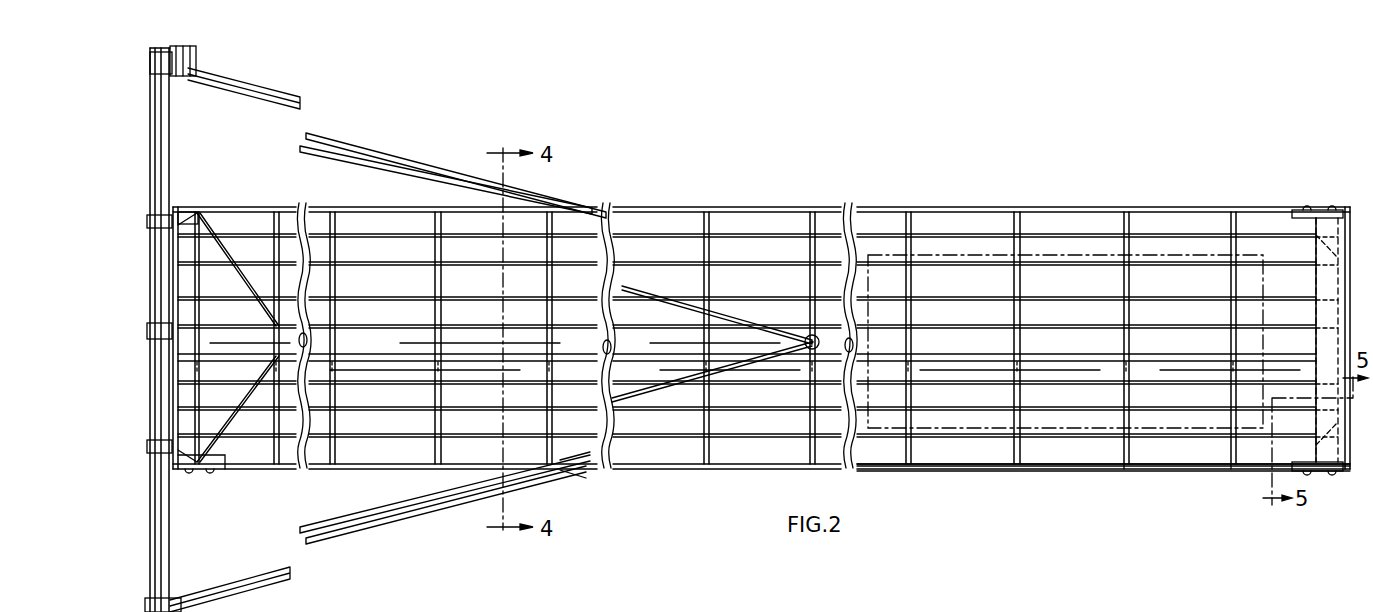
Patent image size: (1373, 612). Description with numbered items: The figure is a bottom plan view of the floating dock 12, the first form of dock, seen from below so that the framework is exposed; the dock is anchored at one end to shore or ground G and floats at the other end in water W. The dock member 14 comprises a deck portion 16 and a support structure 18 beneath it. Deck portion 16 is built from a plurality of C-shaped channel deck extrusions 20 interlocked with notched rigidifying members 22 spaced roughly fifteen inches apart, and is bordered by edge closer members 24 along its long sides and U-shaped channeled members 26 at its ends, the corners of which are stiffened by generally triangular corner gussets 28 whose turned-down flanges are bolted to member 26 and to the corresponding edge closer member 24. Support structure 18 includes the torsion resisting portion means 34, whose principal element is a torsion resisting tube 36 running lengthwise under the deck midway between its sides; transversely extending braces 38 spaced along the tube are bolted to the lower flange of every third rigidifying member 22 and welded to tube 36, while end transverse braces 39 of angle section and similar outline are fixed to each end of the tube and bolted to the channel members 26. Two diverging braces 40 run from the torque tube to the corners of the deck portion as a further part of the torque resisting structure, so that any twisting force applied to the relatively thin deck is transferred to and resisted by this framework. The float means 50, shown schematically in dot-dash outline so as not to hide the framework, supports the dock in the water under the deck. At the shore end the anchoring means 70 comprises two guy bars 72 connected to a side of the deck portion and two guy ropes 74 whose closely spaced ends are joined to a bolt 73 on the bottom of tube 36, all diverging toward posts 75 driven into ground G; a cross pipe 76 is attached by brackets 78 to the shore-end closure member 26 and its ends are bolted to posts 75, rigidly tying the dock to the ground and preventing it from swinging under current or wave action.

The dock 12 is at (962, 470).
The dock member 14 is at (1050, 470).
The deck portion 16 is at (1103, 488).
The support structure 18 is at (985, 343).
The deck extrusions 20 is at (1188, 458).
The rigidifying members 22 is at (1124, 212).
The edge closer members 24 is at (790, 207).
The U-shaped channeled members 26 is at (186, 206).
The corner gussets 28 is at (206, 207).
The torsion resisting portion means 34 is at (747, 370).
The torsion resisting tube 36 is at (1205, 335).
The transverse braces 38 is at (440, 283).
The end transverse braces 39 is at (185, 468).
The diverging braces 40 is at (222, 250).
The float means 50 is at (1003, 252).
The anchoring means 70 is at (314, 545).
The guy bars 72 is at (352, 172).
The bolt 73 is at (804, 344).
The guy ropes 74 is at (408, 160).
The post 75 is at (196, 52).
The cross pipe 76 is at (163, 130).
The brackets 78 is at (147, 221).
The ground G is at (125, 289).
The water W is at (1180, 493).